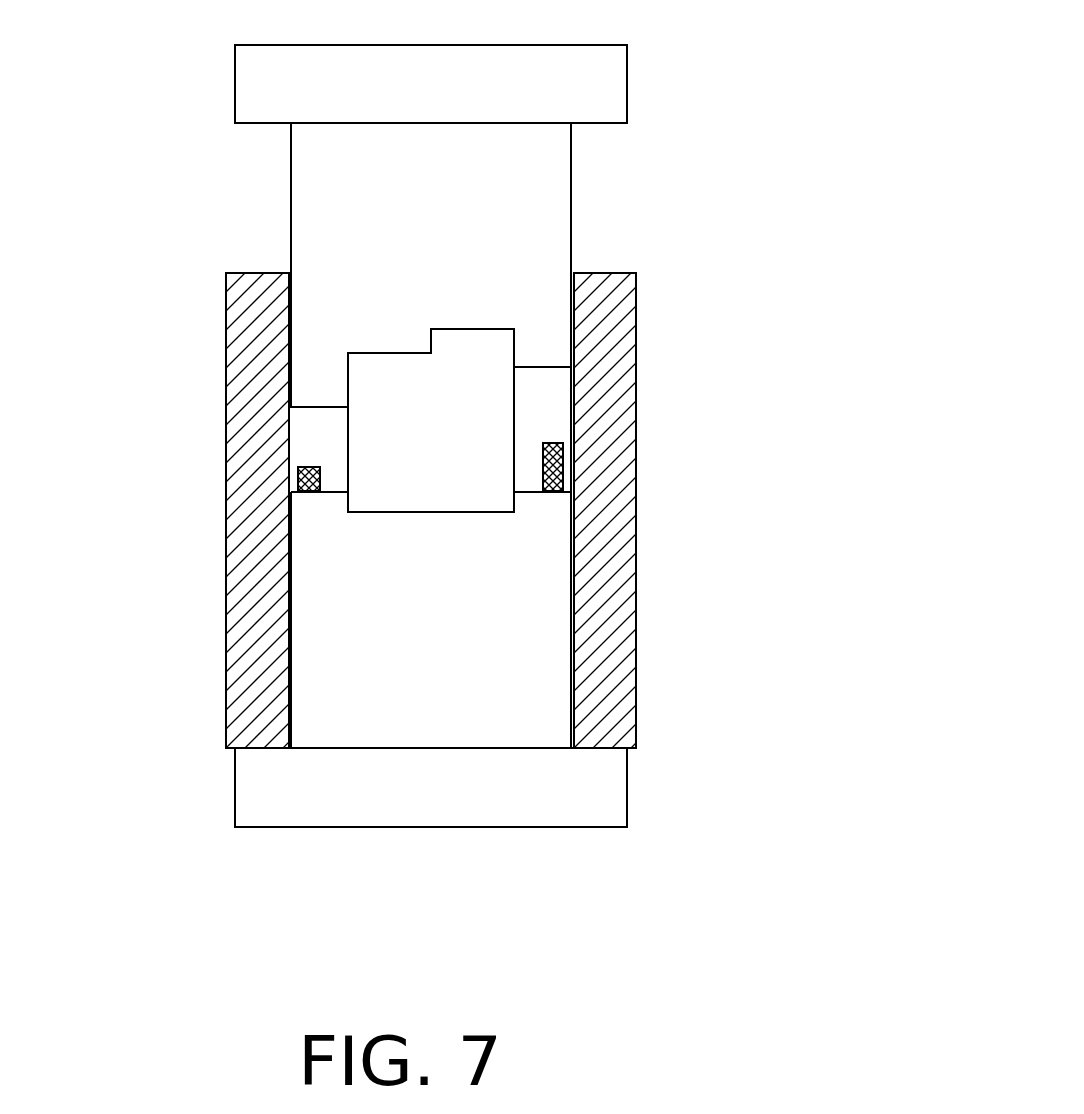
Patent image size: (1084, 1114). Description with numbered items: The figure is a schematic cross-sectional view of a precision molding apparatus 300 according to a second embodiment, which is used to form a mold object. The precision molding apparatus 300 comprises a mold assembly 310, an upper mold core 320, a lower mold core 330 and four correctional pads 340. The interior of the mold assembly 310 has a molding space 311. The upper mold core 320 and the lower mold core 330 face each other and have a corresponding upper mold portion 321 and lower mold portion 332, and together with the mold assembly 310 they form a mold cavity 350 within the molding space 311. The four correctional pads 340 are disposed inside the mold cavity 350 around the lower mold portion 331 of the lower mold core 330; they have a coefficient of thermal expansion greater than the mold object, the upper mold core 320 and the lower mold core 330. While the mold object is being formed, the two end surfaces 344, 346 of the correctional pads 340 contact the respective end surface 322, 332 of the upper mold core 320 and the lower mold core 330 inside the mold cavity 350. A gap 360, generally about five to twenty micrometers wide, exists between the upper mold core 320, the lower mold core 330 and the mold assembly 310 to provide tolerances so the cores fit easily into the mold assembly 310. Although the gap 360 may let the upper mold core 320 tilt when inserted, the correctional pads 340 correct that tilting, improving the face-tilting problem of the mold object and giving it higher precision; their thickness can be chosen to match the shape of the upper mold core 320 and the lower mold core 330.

The precision molding apparatus 300 is at (933, 880).
The mold assembly 310 is at (500, 496).
The molding space 311 is at (496, 412).
The upper mold core 320 is at (607, 92).
The upper mold portion 321 is at (388, 350).
The end surface 322 is at (313, 409).
The lower mold core 330 is at (593, 793).
The lower mold portion 331 is at (430, 512).
The end surface 332 is at (520, 489).
The correctional pad 340 is at (563, 452).
The end surface 344 is at (312, 452).
The end surface 346 is at (303, 481).
The mold cavity 350 is at (381, 482).
The gap 360 is at (574, 336).